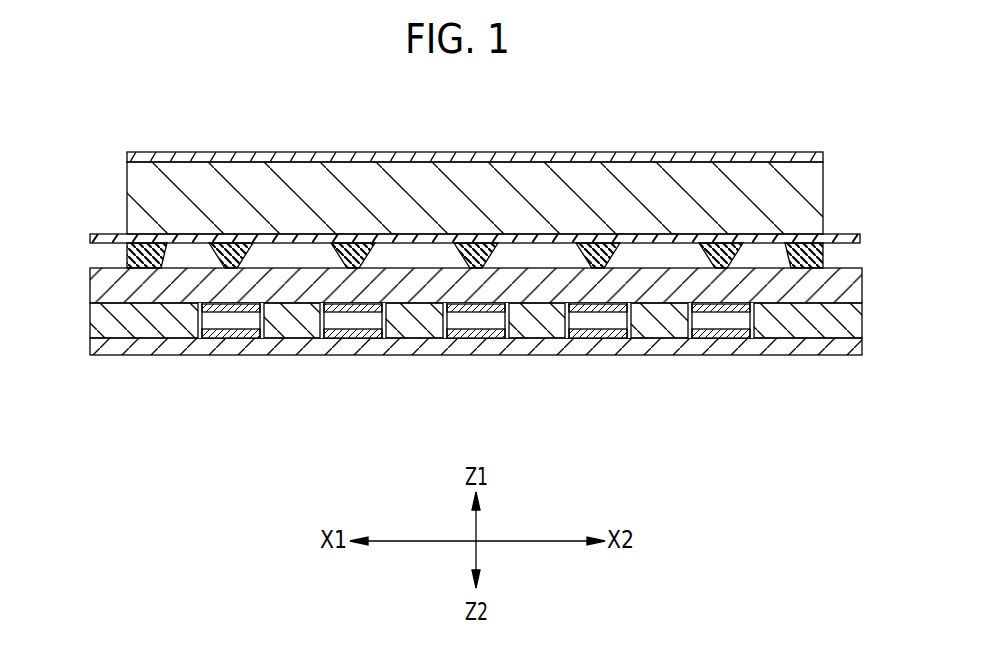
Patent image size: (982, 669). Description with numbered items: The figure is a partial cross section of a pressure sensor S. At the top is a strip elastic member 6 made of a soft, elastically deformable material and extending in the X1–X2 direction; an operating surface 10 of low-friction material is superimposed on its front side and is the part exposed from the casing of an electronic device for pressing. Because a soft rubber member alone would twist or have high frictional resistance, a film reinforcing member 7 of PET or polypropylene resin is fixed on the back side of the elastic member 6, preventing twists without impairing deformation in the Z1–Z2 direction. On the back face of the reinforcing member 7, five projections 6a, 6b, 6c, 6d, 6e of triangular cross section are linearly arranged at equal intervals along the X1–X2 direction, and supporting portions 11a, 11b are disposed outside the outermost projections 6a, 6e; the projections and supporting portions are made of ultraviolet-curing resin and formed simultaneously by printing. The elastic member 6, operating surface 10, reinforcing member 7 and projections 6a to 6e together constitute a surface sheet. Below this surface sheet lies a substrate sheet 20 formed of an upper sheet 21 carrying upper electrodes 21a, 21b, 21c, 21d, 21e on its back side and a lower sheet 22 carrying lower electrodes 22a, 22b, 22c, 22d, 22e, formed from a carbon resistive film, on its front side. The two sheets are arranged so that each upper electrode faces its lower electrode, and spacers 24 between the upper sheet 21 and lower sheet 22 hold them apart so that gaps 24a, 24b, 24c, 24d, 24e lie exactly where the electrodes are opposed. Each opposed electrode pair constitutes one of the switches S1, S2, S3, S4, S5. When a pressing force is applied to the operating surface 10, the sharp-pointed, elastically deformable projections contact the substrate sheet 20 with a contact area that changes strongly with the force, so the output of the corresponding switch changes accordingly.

The pressure sensor S is at (538, 140).
The switch S1 is at (220, 289).
The switch S2 is at (342, 289).
The switch S3 is at (465, 289).
The switch S4 is at (587, 289).
The switch S5 is at (710, 289).
The operating surface 10 is at (781, 152).
The elastic member 6 is at (823, 178).
The projection 6a is at (239, 243).
The projection 6b is at (361, 243).
The projection 6c is at (484, 243).
The projection 6d is at (606, 243).
The projection 6e is at (729, 243).
The reinforcing member 7 is at (853, 236).
The supporting portion 11a is at (127, 255).
The supporting portion 11b is at (823, 258).
The substrate sheet 20 is at (465, 365).
The upper sheet 21 is at (105, 290).
The lower sheet 22 is at (102, 347).
The upper electrode 21a is at (225, 330).
The upper electrode 21b is at (347, 330).
The upper electrode 21c is at (470, 330).
The upper electrode 21d is at (592, 330).
The upper electrode 21e is at (715, 330).
The lower electrode 22a is at (248, 335).
The lower electrode 22b is at (370, 335).
The lower electrode 22c is at (493, 335).
The lower electrode 22d is at (615, 335).
The lower electrode 22e is at (738, 335).
The spacer 24 is at (287, 333).
The gap 24a is at (198, 349).
The gap 24b is at (320, 349).
The gap 24c is at (443, 349).
The gap 24d is at (565, 349).
The gap 24e is at (688, 349).